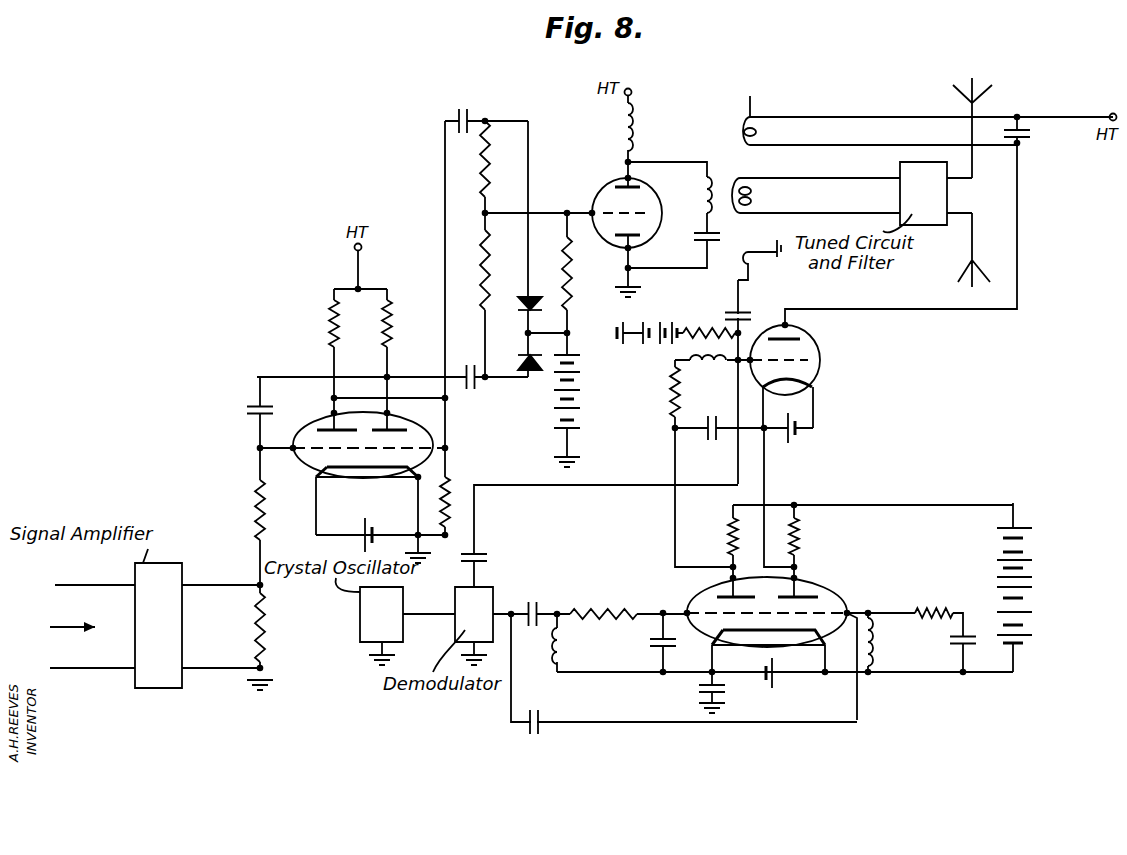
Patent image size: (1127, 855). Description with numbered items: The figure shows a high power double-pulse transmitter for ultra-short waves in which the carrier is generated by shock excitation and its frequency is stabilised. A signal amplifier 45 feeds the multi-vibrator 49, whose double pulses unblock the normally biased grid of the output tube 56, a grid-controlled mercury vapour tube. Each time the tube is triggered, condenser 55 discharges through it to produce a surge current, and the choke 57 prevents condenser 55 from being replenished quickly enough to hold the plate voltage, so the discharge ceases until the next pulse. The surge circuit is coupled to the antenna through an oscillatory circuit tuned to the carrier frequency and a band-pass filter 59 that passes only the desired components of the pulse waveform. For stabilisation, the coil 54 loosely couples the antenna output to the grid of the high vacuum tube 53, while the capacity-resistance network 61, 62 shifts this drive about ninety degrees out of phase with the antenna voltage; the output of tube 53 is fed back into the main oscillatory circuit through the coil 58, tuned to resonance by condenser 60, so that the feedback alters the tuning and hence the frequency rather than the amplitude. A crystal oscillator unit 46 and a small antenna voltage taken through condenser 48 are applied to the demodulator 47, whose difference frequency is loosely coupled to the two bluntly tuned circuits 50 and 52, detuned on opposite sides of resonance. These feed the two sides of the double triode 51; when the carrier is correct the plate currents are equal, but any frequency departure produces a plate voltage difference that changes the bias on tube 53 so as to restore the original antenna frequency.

The signal amplifier 45 is at (158, 625).
The crystal oscillator unit 46 is at (381, 614).
The demodulator 47 is at (474, 614).
The condenser 48 is at (488, 556).
The multi-vibrator 49 is at (298, 421).
The bluntly tuned circuit 50 is at (586, 646).
The double triode 51 is at (837, 586).
The bluntly tuned circuit 52 is at (910, 637).
The high vacuum tube 53 is at (822, 360).
The coil 54 is at (747, 243).
The condenser 55 is at (697, 241).
The output tube 56 is at (597, 195).
The choke 57 is at (632, 142).
The coil 58 is at (746, 145).
The band-pass filter 59 is at (923, 193).
The condenser 60 is at (1031, 134).
The capacity-resistance network 61 is at (725, 312).
The capacity-resistance network 62 is at (688, 318).